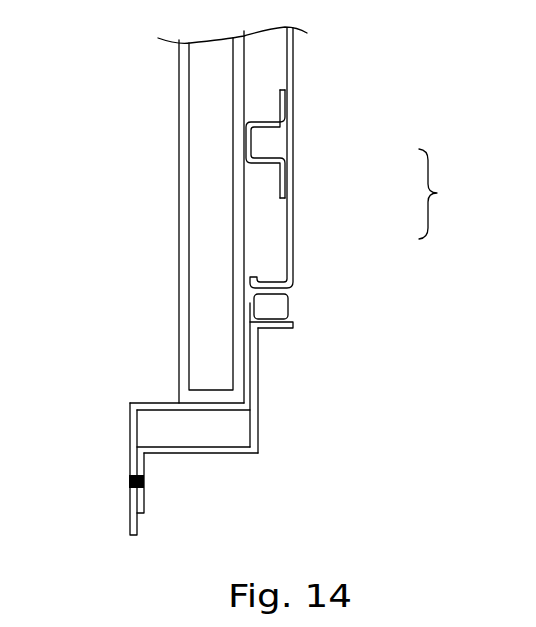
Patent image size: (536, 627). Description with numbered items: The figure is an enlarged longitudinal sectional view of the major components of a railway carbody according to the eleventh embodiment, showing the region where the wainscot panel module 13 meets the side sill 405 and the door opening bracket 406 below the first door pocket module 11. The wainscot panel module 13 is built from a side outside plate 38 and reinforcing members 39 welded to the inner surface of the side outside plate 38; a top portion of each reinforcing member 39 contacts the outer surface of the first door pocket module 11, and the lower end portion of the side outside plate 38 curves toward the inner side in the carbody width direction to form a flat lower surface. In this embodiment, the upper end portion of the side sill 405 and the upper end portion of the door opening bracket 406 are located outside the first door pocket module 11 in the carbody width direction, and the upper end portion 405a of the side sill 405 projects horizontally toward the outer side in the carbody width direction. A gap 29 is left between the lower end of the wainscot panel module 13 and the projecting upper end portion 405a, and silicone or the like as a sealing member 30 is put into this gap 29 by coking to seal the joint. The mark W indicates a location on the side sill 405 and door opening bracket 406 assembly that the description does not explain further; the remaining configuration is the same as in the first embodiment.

The first door pocket module 11 is at (180, 137).
The wainscot panel module 13 is at (443, 194).
The reinforcing member 39 is at (267, 160).
The side outside plate 38 is at (293, 238).
The gap 29 is at (290, 292).
The sealing member 30 is at (280, 308).
The upper end portion of the side sill 405a is at (273, 330).
The door opening bracket 406 is at (128, 430).
The side sill 405 is at (195, 455).
The weld / joint W is at (128, 485).